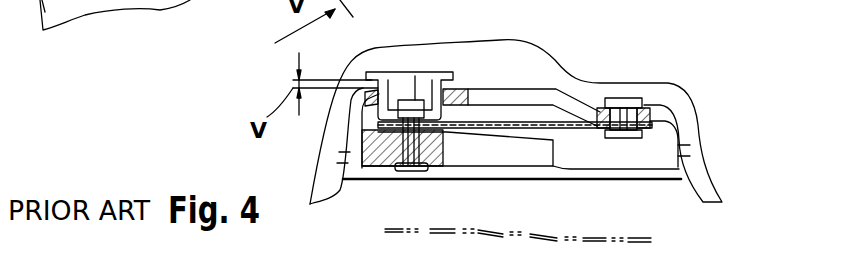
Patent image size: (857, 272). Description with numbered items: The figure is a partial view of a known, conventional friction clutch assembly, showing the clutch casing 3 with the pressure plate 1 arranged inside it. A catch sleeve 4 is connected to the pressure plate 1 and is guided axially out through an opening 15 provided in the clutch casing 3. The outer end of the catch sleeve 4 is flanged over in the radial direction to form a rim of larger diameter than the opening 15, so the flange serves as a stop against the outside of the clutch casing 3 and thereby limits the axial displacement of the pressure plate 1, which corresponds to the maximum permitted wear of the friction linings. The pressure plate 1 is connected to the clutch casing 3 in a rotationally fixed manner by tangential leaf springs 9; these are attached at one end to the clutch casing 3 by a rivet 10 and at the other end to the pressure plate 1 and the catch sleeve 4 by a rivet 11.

The pressure plate 1 is at (389, 149).
The clutch casing 3 is at (672, 116).
The catch sleeve 4 is at (450, 72).
The tangential leaf springs 9 is at (550, 122).
The rivet 10 is at (621, 115).
The rivet 11 is at (407, 140).
The opening 15 is at (467, 97).